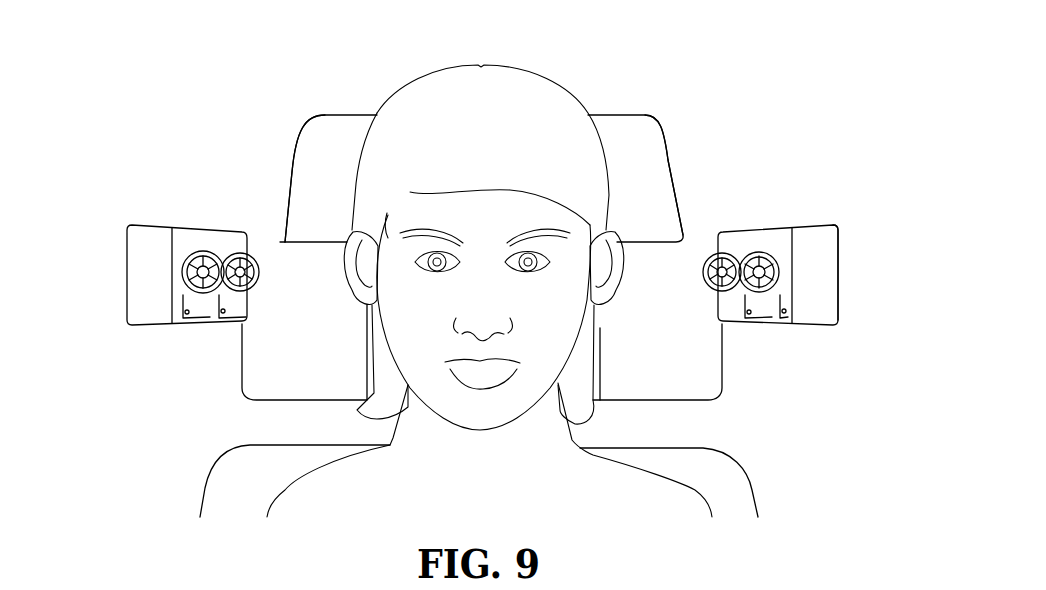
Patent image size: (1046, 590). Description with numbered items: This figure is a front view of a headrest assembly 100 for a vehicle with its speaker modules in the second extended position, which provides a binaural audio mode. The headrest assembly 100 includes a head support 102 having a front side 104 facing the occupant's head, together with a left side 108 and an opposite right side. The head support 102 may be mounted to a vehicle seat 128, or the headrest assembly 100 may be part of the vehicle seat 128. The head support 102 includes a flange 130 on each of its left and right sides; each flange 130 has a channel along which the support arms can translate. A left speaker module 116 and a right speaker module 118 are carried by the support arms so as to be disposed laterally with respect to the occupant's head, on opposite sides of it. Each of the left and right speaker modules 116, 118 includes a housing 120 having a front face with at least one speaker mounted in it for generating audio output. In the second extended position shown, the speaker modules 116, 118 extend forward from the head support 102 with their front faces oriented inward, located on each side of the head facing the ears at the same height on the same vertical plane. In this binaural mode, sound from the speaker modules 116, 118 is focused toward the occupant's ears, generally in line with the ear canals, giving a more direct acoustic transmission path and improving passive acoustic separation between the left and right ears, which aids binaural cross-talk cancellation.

The headrest assembly 100 is at (245, 76).
The head support 102 is at (646, 108).
The front side 104 is at (650, 170).
The left side 108 is at (292, 172).
The left speaker module 116 is at (128, 275).
The right speaker module 118 is at (838, 270).
The housing 120 is at (836, 215).
The vehicle seat 128 is at (200, 488).
The flange 130 is at (303, 345).